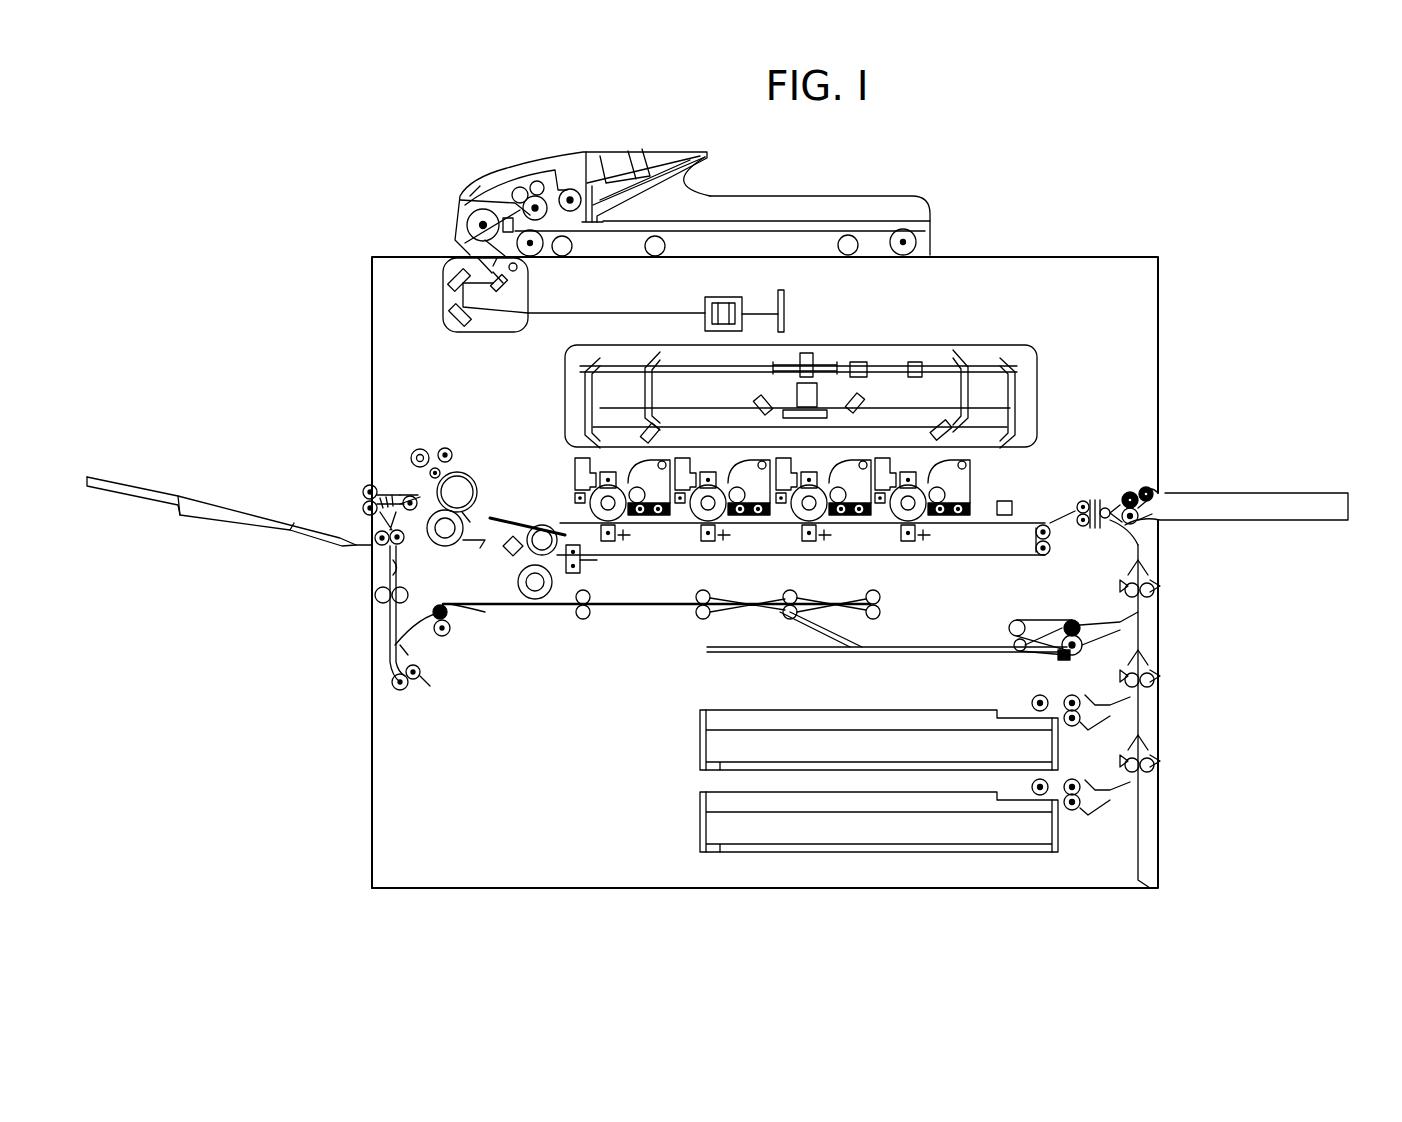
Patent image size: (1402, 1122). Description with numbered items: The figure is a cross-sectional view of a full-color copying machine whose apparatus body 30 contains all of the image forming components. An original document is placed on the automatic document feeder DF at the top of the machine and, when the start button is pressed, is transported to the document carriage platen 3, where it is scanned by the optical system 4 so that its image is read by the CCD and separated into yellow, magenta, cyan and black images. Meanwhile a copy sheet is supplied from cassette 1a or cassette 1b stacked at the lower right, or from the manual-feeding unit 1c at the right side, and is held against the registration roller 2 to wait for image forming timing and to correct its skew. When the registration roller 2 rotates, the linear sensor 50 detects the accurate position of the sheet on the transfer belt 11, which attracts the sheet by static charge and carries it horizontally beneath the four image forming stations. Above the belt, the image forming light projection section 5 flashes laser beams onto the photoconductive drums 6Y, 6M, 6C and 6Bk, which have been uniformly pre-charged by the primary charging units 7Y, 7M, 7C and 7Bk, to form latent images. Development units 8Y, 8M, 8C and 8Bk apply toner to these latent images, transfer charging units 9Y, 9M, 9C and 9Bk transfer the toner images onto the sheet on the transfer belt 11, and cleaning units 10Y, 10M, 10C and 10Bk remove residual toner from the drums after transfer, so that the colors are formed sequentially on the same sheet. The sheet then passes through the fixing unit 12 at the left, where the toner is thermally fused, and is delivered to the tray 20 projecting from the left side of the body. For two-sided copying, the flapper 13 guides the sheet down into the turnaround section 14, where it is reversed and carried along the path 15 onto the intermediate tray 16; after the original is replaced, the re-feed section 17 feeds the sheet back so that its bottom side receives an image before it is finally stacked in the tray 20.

The cassette 1a is at (1047, 827).
The cassette 1b is at (1047, 742).
The manual-feeding unit 1c is at (1258, 493).
The registration roller 2 is at (1090, 500).
The document carriage platen 3 is at (920, 256).
The optical system 4 is at (440, 292).
The image forming light projection section 5 is at (1045, 370).
The photoconductive drum 6Bk is at (612, 470).
The photoconductive drum 6C is at (712, 470).
The photoconductive drum 6M is at (814, 470).
The photoconductive drum 6Y is at (913, 470).
The primary charging unit 7Bk is at (632, 462).
The primary charging unit 7C is at (732, 462).
The primary charging unit 7M is at (833, 460).
The primary charging unit 7Y is at (932, 462).
The development unit 8Bk is at (658, 516).
The development unit 8C is at (758, 516).
The development unit 8M is at (859, 516).
The development unit 8Y is at (960, 516).
The transfer charging unit 9Bk is at (608, 542).
The transfer charging unit 9C is at (708, 542).
The transfer charging unit 9M is at (809, 542).
The transfer charging unit 9Y is at (908, 542).
The cleaning unit 10Bk is at (586, 458).
The cleaning unit 10C is at (688, 458).
The cleaning unit 10M is at (789, 458).
The cleaning unit 10Y is at (888, 458).
The transfer belt 11 is at (548, 522).
The fixing unit 12 is at (458, 470).
The flapper 13 is at (368, 490).
The turnaround section 14 is at (390, 630).
The path 15 is at (550, 604).
The intermediate tray 16 is at (872, 652).
The re-feed section 17 is at (1050, 612).
The tray 20 is at (178, 494).
The apparatus body 30 is at (1125, 262).
The linear sensor 50 is at (1010, 500).
The element CCD is at (689, 300).
The automatic document feeder DF is at (652, 150).